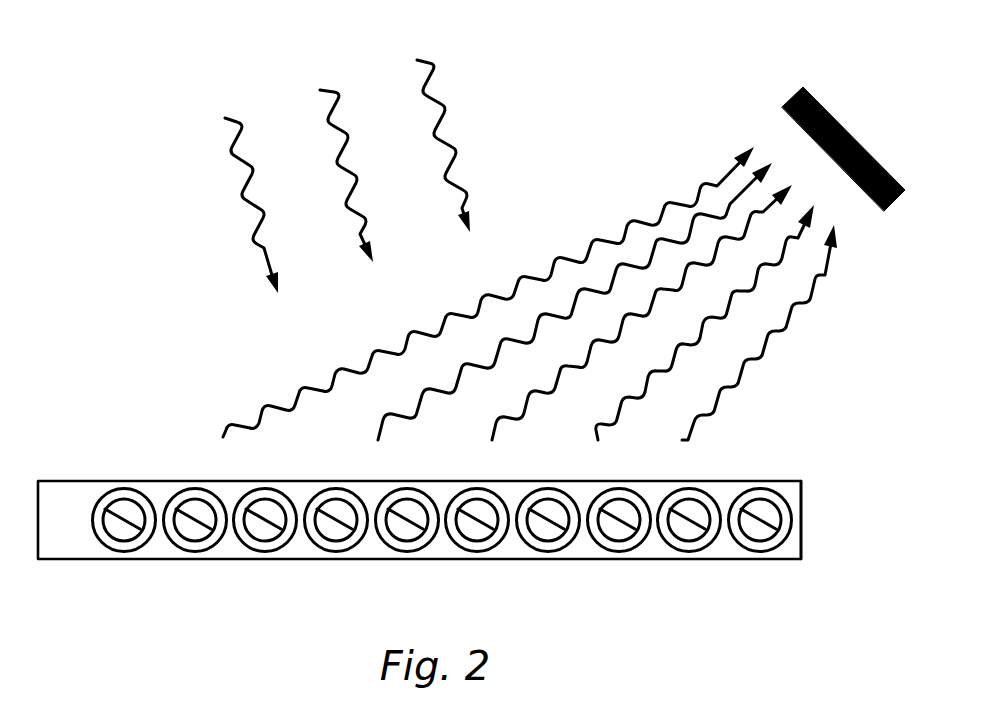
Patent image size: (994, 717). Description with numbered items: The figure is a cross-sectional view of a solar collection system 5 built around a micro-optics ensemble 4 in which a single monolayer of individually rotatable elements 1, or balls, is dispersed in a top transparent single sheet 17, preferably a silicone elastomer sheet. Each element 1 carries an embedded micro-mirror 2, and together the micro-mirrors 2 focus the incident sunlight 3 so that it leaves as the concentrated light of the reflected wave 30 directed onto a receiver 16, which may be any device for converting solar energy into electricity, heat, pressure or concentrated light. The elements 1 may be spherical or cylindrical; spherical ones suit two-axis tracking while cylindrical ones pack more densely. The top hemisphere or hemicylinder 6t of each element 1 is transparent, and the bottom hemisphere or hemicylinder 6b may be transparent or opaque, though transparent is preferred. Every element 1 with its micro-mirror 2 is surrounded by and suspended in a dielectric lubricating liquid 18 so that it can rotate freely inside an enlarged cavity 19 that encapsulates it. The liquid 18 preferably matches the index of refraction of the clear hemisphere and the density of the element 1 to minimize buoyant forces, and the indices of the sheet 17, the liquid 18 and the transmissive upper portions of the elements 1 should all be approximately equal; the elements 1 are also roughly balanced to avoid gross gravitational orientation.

The element 1 is at (56, 538).
The micro-mirror 2 is at (272, 515).
The incident sunlight 3 is at (252, 212).
The micro-optics ensemble 4 is at (848, 538).
The solar collection system 5 is at (559, 143).
The top hemisphere 6t is at (494, 510).
The bottom hemisphere 6b is at (185, 530).
The receiver 16 is at (833, 112).
The top transparent single sheet 17 is at (722, 495).
The dielectric lubricating liquid 18 is at (620, 545).
The enlarged cavity 19 is at (538, 550).
The reflected wave 30 is at (410, 332).